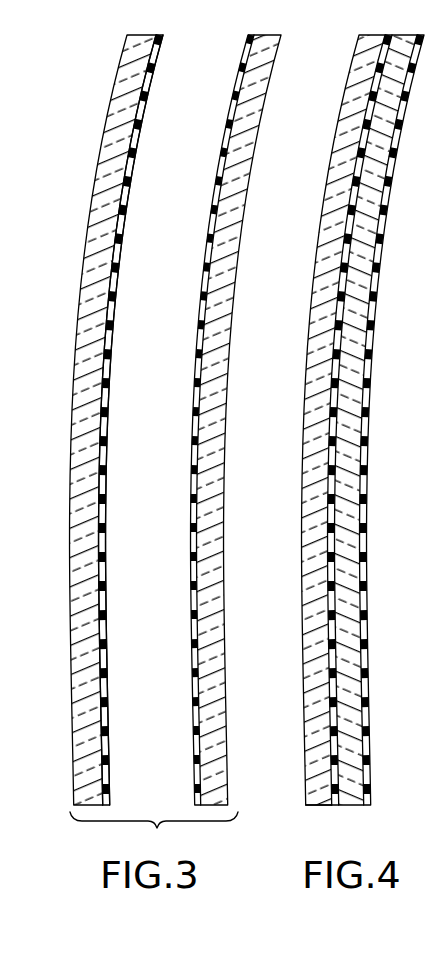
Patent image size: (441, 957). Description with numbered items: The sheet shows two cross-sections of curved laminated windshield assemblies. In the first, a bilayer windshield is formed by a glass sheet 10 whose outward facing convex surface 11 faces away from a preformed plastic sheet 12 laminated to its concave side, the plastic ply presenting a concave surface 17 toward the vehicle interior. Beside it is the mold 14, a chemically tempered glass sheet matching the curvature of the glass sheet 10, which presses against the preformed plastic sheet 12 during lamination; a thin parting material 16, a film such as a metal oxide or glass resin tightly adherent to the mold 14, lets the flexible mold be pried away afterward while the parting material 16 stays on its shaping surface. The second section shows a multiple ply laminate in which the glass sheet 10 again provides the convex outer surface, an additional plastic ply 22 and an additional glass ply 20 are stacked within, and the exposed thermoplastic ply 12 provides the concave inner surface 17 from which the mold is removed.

In FIG. 3, the glass sheet 10 is at (95, 423).
In FIG. 4, the glass sheet 10 is at (320, 808).
In FIG. 3, the outward facing convex surface 11 is at (70, 651).
In FIG. 4, the outward facing convex surface 11 is at (302, 632).
In FIG. 3, the preformed plastic sheet 12 is at (112, 757).
In FIG. 4, the preformed plastic sheet 12 is at (371, 745).
In FIG. 3, the mold 14 is at (213, 423).
In FIG. 3, the parting material 16 is at (193, 700).
In FIG. 3, the concave surface 17 is at (109, 568).
In FIG. 4, the concave surface 17 is at (371, 683).
In FIG. 4, the additional glass ply 20 is at (344, 435).
In FIG. 4, the additional plastic ply 22 is at (334, 750).